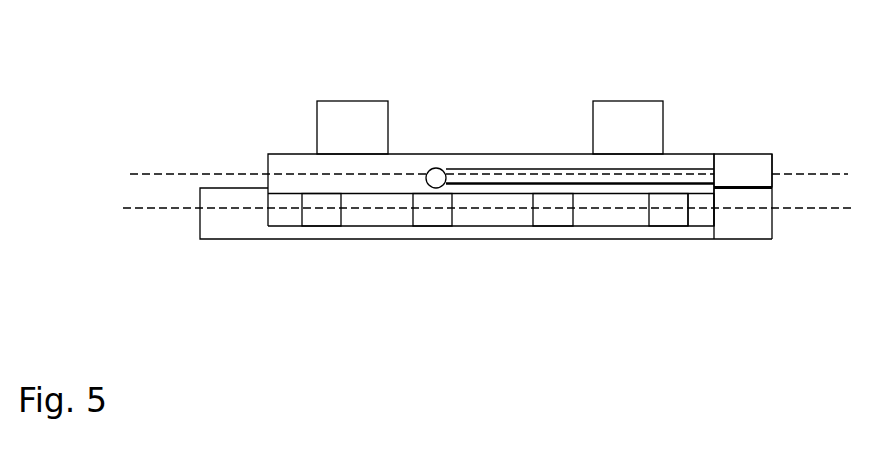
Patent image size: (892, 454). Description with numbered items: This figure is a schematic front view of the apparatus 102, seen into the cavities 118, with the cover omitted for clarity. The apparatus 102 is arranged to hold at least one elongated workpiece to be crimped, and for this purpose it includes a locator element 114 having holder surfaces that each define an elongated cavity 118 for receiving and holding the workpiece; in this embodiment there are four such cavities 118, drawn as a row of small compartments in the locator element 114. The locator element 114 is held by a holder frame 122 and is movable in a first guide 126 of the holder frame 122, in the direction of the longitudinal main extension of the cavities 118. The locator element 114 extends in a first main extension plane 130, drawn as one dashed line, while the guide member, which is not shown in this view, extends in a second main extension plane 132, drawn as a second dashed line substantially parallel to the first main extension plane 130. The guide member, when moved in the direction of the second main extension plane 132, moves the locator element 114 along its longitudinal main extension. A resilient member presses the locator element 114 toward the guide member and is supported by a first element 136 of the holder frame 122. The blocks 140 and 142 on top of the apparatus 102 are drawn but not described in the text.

The apparatus 102 is at (720, 77).
The locator element 114 is at (702, 218).
The elongated cavity 118 is at (435, 222).
The holder frame 122 is at (745, 225).
The first guide 126 is at (287, 227).
The first main extension plane 130 is at (138, 209).
The second main extension plane 132 is at (147, 173).
The first element 136 is at (735, 173).
The first module 140 is at (358, 122).
The second module 142 is at (627, 125).